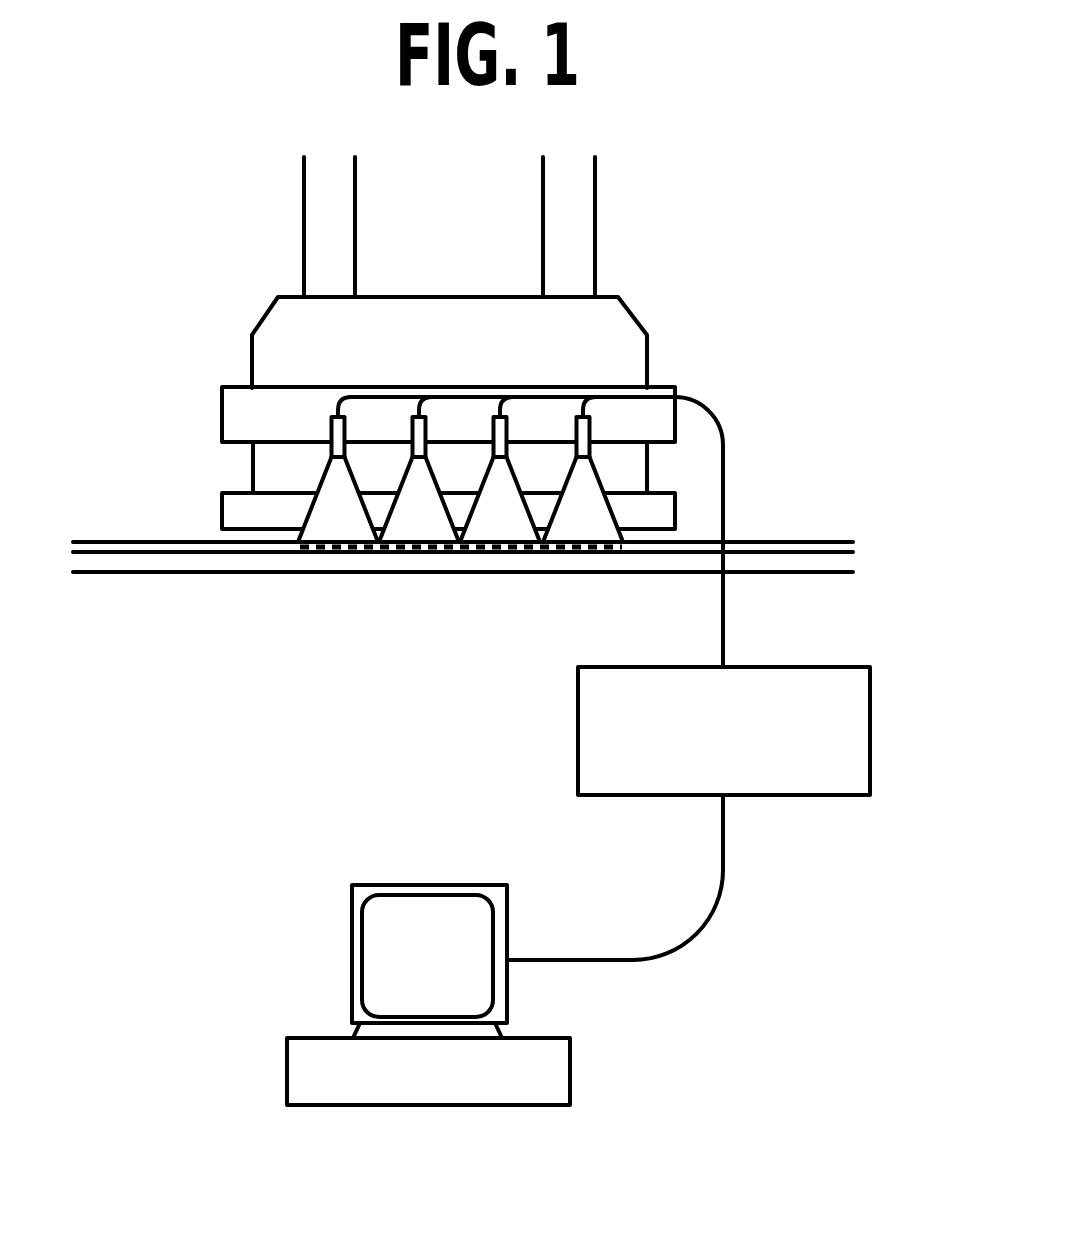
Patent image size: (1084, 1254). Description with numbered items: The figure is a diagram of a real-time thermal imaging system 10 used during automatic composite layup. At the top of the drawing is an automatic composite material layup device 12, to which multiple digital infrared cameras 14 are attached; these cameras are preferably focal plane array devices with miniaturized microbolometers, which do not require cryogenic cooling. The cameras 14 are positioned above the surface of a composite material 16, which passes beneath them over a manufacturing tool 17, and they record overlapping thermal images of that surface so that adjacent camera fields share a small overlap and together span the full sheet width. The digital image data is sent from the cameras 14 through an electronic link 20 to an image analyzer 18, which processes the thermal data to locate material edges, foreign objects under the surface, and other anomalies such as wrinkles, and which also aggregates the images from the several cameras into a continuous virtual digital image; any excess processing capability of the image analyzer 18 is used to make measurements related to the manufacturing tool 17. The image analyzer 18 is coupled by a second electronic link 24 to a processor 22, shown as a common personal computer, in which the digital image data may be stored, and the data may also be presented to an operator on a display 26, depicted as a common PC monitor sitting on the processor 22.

The real-time thermal imaging system 10 is at (961, 541).
The automatic composite material layup device 12 is at (647, 343).
The digital infrared cameras 14 is at (330, 430).
The composite material 16 is at (132, 540).
The manufacturing tool 17 is at (190, 574).
The image analyzer 18 is at (870, 690).
The electronic link 20 is at (723, 600).
The processor 22 is at (287, 1052).
The electronic link 24 is at (613, 963).
The display 26 is at (352, 898).